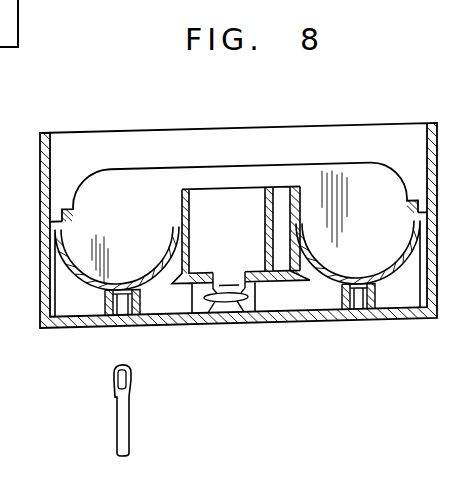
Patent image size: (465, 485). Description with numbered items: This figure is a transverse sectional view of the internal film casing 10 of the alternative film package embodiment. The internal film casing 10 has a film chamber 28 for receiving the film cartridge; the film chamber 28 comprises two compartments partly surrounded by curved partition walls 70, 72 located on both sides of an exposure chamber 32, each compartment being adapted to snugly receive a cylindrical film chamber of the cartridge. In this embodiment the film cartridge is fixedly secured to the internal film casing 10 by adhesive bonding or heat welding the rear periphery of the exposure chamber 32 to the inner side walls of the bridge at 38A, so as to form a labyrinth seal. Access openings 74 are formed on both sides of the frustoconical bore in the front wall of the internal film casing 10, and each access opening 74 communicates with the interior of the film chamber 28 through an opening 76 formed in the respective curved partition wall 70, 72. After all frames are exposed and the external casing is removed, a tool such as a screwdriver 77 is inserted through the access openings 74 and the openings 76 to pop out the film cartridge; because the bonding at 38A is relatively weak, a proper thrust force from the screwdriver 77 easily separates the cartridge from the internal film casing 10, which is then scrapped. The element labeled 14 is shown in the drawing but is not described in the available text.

The film chamber 28 is at (372, 148).
The bonding location 38A is at (305, 192).
The exposure chamber 32 is at (226, 210).
The curved partition wall 72 is at (85, 279).
The curved partition wall 70 is at (390, 289).
The opening 76 is at (124, 293).
The access opening 74 is at (128, 318).
The nozzle 14 is at (230, 327).
The internal film casing 10 is at (303, 339).
The screwdriver 77 is at (117, 412).